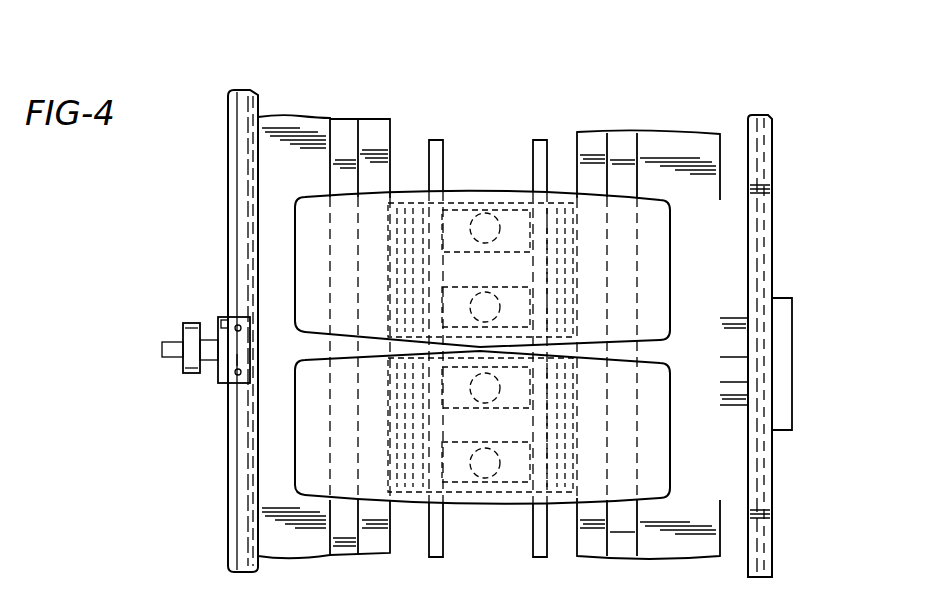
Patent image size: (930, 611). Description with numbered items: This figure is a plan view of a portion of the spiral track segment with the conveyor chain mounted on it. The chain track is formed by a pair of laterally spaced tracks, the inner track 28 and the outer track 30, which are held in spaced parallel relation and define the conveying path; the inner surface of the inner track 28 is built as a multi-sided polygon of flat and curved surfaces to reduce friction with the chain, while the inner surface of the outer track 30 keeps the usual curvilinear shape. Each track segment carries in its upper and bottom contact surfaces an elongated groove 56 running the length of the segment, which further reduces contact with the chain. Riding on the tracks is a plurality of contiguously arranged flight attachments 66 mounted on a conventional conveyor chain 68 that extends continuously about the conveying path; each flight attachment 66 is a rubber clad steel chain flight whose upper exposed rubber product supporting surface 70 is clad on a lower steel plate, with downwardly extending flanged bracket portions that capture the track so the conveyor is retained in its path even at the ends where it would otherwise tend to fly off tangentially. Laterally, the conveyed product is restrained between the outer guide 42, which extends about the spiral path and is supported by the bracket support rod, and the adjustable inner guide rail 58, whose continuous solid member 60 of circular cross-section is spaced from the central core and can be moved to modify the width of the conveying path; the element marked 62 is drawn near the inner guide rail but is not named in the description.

The inner track 28 is at (300, 120).
The outer track 30 is at (687, 140).
The outer guide 42 is at (773, 195).
The groove 56 is at (350, 135).
The adjustable inner guide rail 58 is at (220, 325).
The continuous solid member 60 is at (238, 155).
The knob 62 is at (163, 340).
The flight attachment 66 is at (493, 190).
The conveyor chain 68 is at (431, 147).
The rubber product supporting surface 70 is at (583, 213).